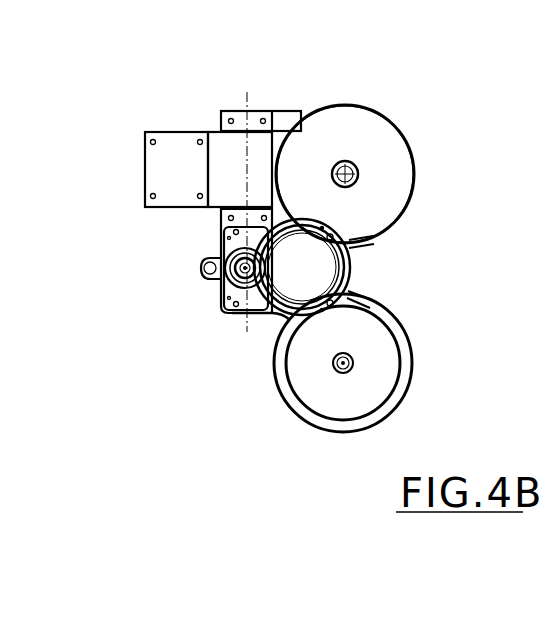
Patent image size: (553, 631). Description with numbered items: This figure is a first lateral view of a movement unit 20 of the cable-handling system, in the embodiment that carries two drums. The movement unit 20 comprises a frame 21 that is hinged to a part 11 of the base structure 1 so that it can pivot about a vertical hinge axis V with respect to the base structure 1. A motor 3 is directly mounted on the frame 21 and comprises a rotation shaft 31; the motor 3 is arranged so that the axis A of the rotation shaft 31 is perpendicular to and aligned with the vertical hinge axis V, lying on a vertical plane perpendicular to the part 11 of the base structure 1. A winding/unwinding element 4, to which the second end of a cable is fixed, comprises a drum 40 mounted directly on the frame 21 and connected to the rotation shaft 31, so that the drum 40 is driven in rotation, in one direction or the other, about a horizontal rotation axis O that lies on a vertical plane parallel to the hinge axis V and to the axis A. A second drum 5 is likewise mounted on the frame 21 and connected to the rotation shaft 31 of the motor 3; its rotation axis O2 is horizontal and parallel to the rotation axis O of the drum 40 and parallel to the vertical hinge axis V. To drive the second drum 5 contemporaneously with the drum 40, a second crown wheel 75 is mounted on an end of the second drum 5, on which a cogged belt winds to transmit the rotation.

The base structure 1 is at (140, 126).
The part of the base structure 11 is at (218, 141).
The vertical hinge axis V is at (242, 118).
The frame 21 is at (290, 112).
The winding/unwinding element 4 is at (390, 100).
The drum 40 is at (397, 172).
The horizontal rotation axis O is at (347, 162).
The motor 3 is at (210, 247).
The rotation shaft 31 is at (226, 285).
The axis of the rotation shaft A is at (243, 284).
The movement unit 20 is at (456, 296).
The second drum 5 is at (398, 398).
The second crown wheel 75 is at (316, 383).
The rotation axis of the second drum O2 is at (343, 373).